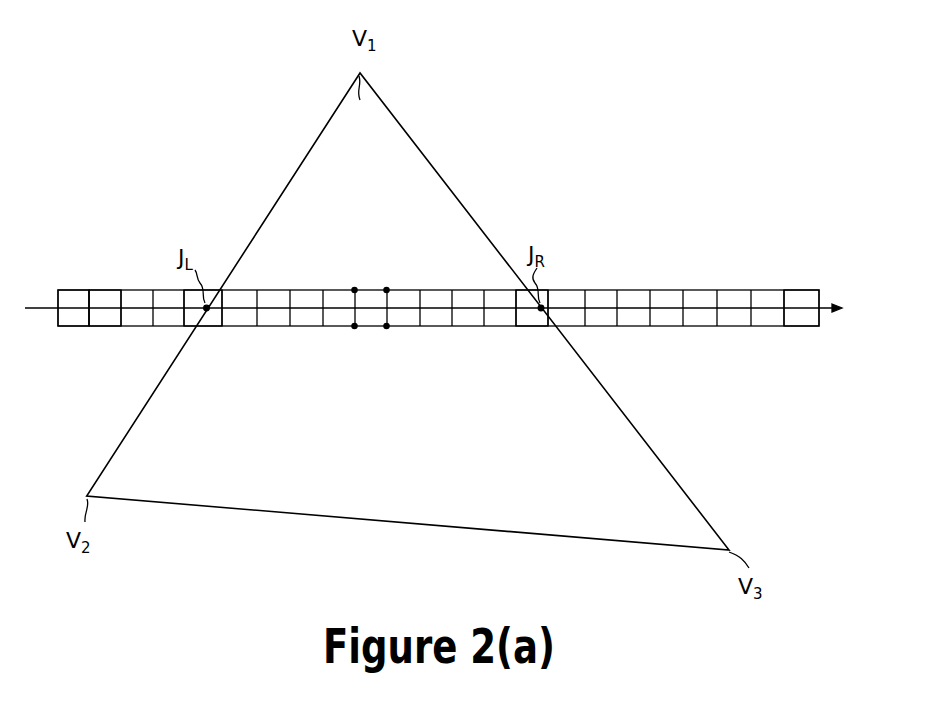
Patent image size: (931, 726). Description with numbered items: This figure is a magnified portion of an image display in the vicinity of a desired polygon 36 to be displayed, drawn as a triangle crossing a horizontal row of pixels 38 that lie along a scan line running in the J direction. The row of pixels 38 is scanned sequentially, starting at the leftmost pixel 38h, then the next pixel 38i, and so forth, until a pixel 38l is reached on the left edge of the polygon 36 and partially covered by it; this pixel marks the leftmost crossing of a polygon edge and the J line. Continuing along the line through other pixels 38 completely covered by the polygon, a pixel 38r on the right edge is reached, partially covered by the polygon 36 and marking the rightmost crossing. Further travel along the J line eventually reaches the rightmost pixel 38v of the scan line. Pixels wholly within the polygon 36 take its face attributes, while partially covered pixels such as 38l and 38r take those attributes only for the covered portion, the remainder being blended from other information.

The polygon 36 is at (420, 145).
The pixels 38 is at (369, 295).
The leftmost pixel 38h is at (72, 296).
The next pixel 38i is at (105, 296).
The pixel on the left edge of the polygon 38l is at (214, 318).
The pixel on the right edge of the polygon 38r is at (529, 318).
The rightmost pixel 38v is at (797, 318).